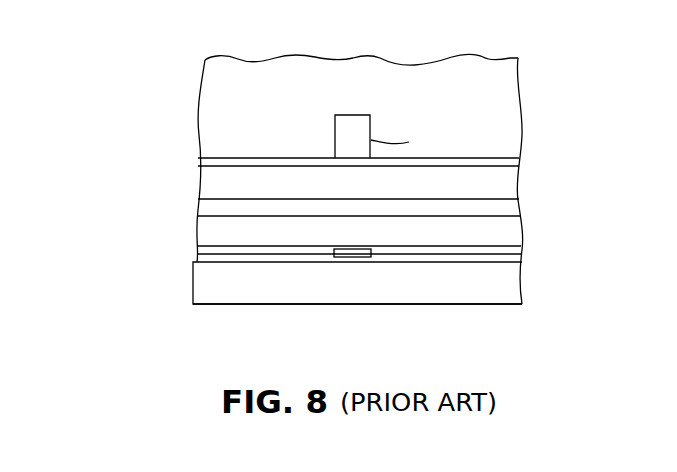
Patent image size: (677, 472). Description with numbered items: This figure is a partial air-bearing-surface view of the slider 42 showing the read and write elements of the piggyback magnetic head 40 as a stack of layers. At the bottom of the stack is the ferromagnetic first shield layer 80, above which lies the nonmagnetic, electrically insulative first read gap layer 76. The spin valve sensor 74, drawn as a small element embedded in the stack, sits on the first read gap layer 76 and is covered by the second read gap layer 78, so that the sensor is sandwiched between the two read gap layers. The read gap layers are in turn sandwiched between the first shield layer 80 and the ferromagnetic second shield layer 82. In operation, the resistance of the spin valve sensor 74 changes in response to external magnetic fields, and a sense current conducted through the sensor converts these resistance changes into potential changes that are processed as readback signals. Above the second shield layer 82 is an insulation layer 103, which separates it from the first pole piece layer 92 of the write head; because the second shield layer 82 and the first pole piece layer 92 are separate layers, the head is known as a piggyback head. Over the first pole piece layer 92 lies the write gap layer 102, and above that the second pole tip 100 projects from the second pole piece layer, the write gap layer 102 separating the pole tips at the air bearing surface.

The magnetic head 40 is at (538, 73).
The slider 42 is at (207, 82).
The second pole tip 100 is at (350, 123).
The write gap layer 102 is at (268, 158).
The first pole piece layer 92 is at (208, 180).
The insulation layer 103 is at (510, 209).
The second shield layer 82 is at (205, 230).
The second read gap layer 78 is at (478, 253).
The spin valve sensor 74 is at (350, 258).
The first read gap layer 76 is at (260, 263).
The first shield layer 80 is at (510, 287).